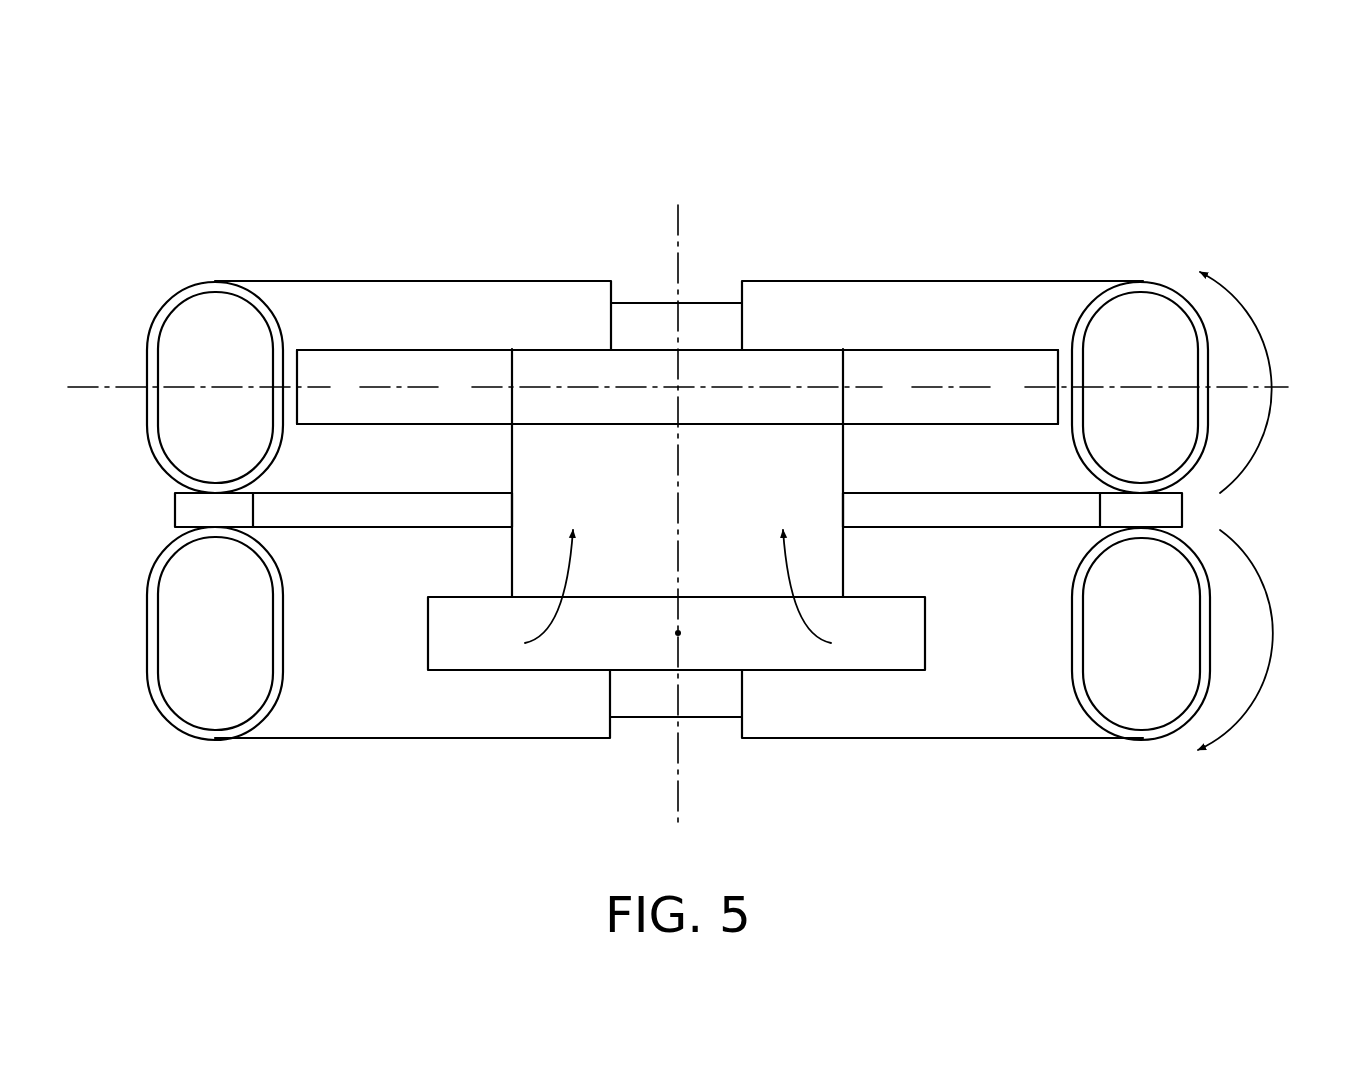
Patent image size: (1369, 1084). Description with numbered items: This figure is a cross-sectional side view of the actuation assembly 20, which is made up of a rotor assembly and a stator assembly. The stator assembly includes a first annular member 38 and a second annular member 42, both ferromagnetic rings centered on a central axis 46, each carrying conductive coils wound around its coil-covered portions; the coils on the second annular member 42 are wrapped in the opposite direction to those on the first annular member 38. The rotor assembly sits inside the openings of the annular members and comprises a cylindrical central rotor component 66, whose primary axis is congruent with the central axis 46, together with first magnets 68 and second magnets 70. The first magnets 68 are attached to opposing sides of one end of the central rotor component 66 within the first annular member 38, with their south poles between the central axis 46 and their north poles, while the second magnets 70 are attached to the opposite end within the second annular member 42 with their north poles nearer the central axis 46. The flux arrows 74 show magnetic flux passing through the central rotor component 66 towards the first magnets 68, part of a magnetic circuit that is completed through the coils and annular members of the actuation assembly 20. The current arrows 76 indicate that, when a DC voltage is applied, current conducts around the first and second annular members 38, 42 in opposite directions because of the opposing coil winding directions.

The actuation assembly 20 is at (230, 195).
The first annular member 38 is at (161, 360).
The second annular member 42 is at (161, 635).
The central axis 46 is at (675, 233).
The central rotor component 66 is at (822, 590).
The first magnets 68 is at (415, 362).
The second magnets 70 is at (452, 660).
The flux arrows 74 is at (553, 623).
The current arrows 76 is at (1275, 378).